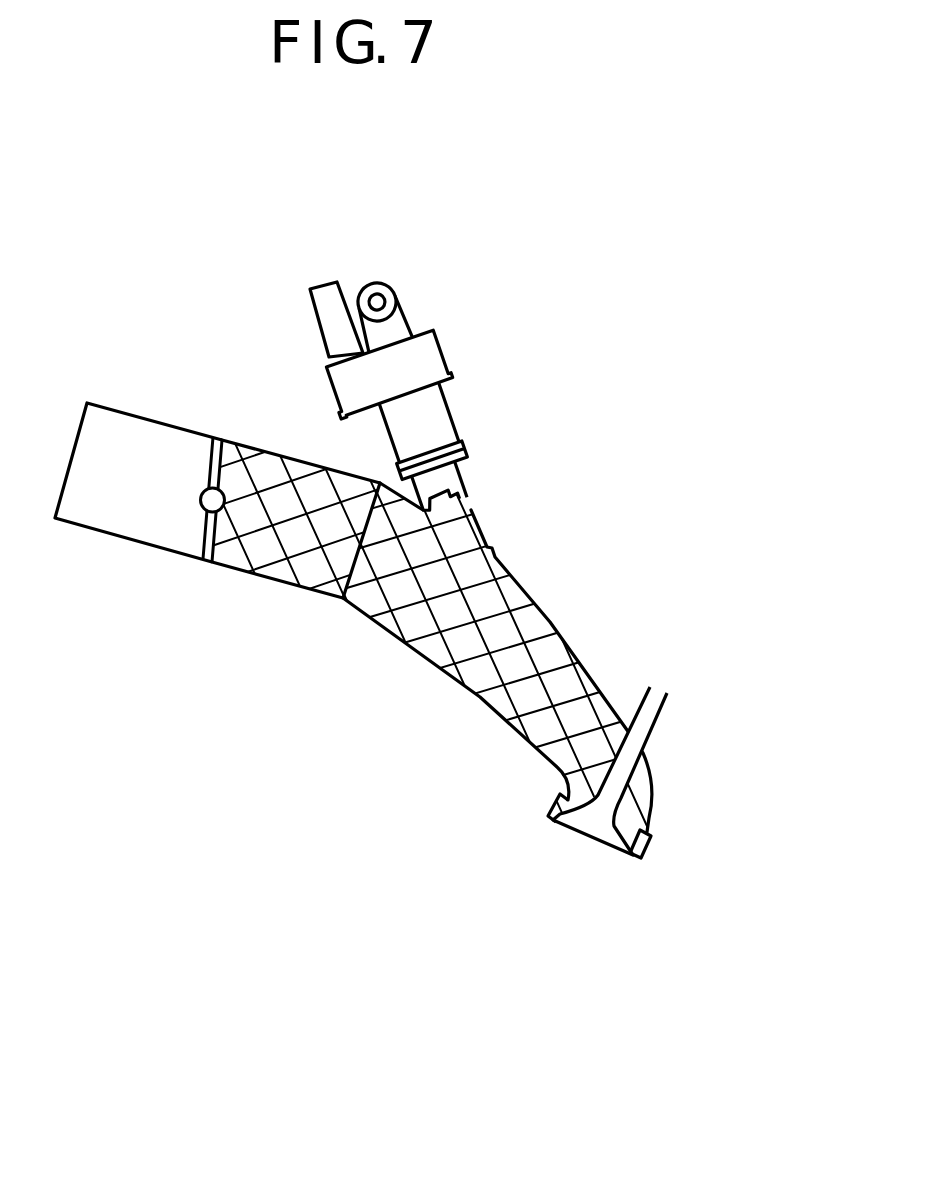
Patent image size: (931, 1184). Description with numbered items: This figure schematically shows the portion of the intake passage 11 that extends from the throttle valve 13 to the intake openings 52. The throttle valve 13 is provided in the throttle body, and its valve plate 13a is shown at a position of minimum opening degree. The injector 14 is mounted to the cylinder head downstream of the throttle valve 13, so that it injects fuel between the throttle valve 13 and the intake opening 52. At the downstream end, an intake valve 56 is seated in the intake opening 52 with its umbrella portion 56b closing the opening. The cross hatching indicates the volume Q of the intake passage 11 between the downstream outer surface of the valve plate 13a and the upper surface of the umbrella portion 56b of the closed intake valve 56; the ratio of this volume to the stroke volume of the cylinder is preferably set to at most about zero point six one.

The intake passage 11 is at (549, 620).
The throttle valve 13 is at (203, 506).
The valve plate 13a is at (213, 455).
The injector 14 is at (450, 418).
The intake opening 52 is at (598, 848).
The intake valve 56 is at (680, 727).
The umbrella portion 56b is at (590, 825).